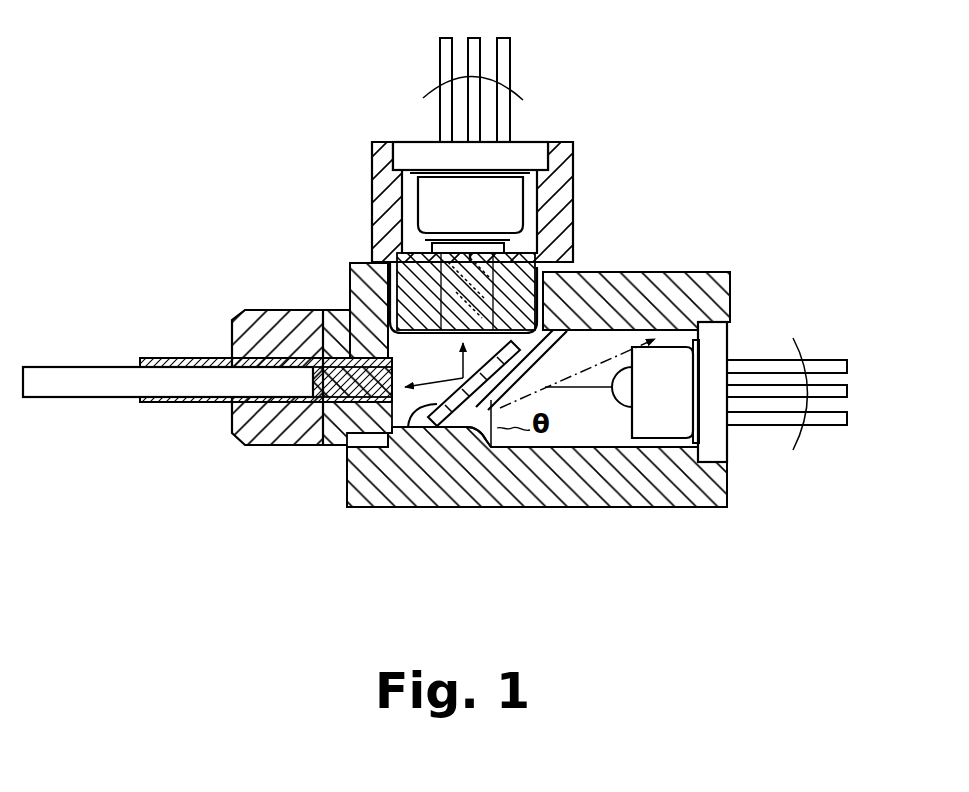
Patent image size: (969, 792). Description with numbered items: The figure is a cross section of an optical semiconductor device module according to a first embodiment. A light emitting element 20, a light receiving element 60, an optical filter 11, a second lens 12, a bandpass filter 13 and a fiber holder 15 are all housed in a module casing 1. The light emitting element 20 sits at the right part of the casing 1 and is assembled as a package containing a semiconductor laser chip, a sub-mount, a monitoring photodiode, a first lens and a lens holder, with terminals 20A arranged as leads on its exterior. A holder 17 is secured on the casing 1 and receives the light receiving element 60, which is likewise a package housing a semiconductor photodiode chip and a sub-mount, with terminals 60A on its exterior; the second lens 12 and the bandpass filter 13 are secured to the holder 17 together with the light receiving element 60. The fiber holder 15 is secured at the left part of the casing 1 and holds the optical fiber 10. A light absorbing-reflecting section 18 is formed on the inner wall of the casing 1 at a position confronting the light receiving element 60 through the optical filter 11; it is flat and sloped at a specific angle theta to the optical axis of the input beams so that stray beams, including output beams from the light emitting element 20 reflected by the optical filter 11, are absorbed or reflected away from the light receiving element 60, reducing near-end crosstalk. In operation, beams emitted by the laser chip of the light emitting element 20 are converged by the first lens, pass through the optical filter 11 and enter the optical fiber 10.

The module casing 1 is at (725, 272).
The optical fiber 10 is at (92, 363).
The optical filter 11 is at (414, 430).
The second lens 12 is at (356, 312).
The bandpass filter 13 is at (506, 257).
The fiber holder 15 is at (263, 317).
The holder 17 is at (568, 188).
The light absorbing-reflecting section 18 is at (482, 447).
The light emitting element 20 is at (733, 348).
The terminals 20A is at (807, 440).
The light receiving element 60 is at (535, 152).
The terminals 60A is at (520, 100).